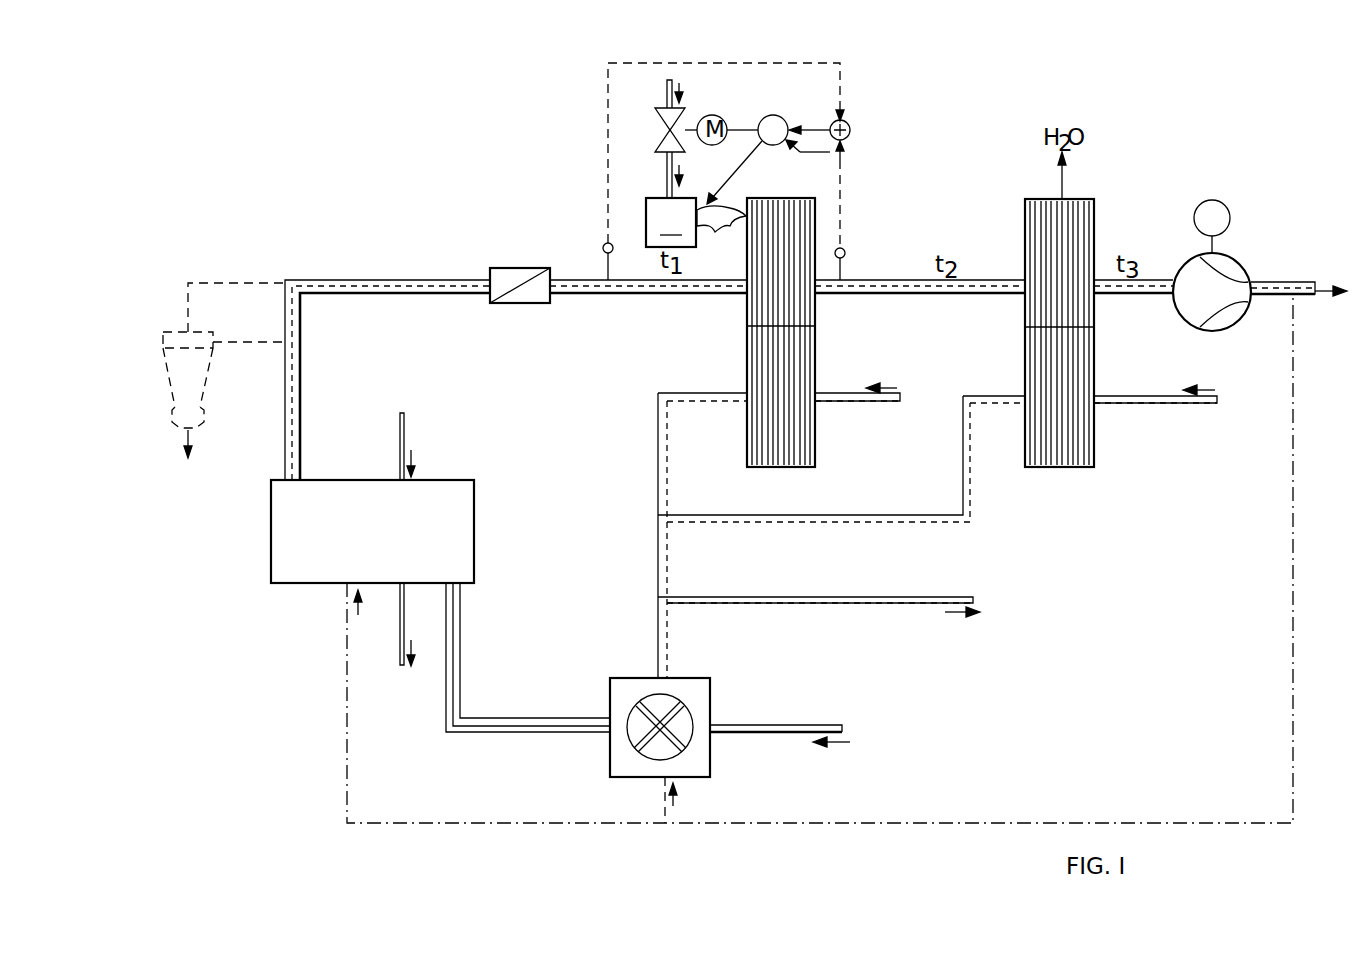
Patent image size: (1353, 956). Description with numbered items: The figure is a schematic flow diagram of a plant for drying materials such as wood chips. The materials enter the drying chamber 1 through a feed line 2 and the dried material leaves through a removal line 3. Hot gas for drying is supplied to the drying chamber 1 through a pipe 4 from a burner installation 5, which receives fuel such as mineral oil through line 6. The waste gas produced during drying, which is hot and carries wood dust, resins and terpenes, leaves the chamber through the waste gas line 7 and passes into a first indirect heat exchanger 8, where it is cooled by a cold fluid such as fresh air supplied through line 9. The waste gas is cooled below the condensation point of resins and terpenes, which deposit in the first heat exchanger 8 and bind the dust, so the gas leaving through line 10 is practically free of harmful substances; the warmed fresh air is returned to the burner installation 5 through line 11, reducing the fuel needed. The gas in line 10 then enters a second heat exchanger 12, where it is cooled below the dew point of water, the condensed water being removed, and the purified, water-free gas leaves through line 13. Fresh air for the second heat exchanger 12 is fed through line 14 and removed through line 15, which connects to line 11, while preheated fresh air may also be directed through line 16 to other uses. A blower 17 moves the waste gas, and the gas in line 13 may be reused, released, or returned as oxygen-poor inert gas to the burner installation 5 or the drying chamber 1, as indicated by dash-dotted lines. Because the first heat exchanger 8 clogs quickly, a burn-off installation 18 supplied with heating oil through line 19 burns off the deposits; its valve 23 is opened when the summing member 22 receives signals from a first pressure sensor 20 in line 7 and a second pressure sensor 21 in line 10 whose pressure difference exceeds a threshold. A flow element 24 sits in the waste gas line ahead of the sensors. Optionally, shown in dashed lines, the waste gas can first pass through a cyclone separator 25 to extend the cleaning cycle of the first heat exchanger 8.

The drying chamber 1 is at (377, 541).
The feed line 2 is at (405, 440).
The removal line 3 is at (399, 632).
The pipe 4 is at (461, 648).
The burner installation 5 is at (627, 685).
The line 6 is at (760, 722).
The waste gas line 7 is at (301, 362).
The first indirect heat exchanger 8 is at (737, 329).
The line 9 is at (857, 393).
The line 10 is at (893, 280).
The line 11 is at (657, 462).
The second heat exchanger 12 is at (1016, 329).
The line 13 is at (1147, 297).
The line 14 is at (1143, 396).
The line 15 is at (887, 515).
The line 16 is at (887, 597).
The blower 17 is at (1228, 284).
The burn-off installation 18 is at (696, 199).
The line 19 is at (666, 100).
The first pressure sensor 20 is at (603, 249).
The second pressure sensor 21 is at (846, 251).
The summing member 22 is at (784, 117).
The valve 23 is at (655, 131).
The flow meter 24 is at (502, 271).
The cyclone separator 25 is at (200, 372).